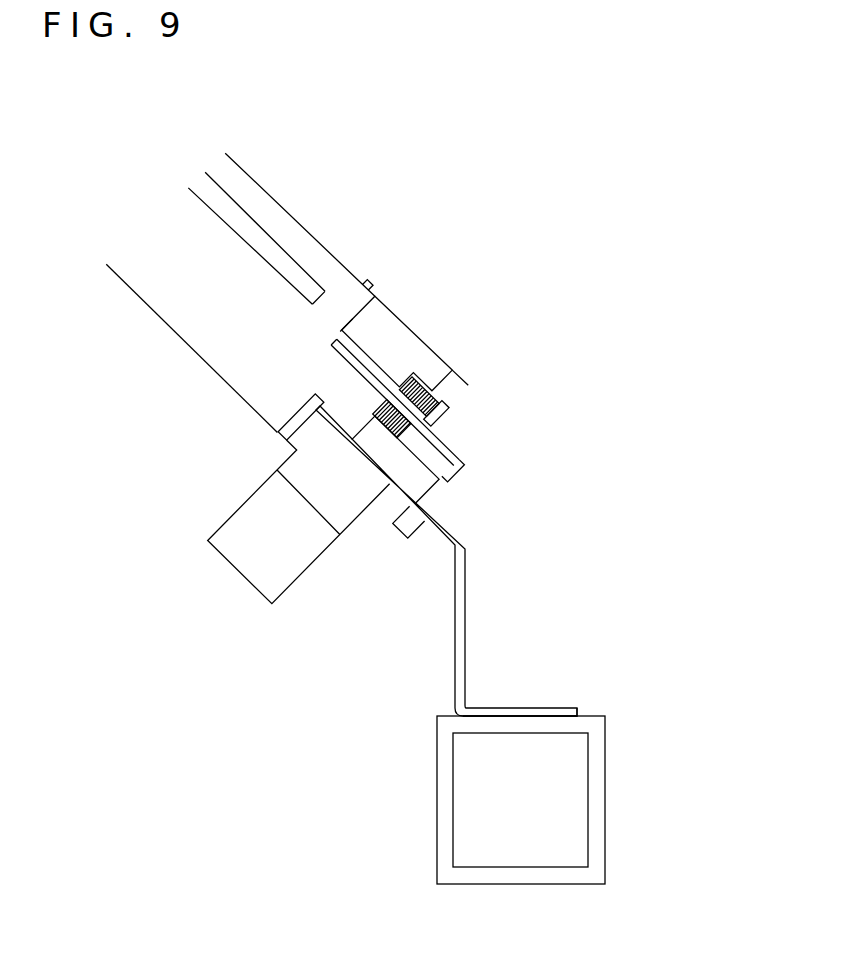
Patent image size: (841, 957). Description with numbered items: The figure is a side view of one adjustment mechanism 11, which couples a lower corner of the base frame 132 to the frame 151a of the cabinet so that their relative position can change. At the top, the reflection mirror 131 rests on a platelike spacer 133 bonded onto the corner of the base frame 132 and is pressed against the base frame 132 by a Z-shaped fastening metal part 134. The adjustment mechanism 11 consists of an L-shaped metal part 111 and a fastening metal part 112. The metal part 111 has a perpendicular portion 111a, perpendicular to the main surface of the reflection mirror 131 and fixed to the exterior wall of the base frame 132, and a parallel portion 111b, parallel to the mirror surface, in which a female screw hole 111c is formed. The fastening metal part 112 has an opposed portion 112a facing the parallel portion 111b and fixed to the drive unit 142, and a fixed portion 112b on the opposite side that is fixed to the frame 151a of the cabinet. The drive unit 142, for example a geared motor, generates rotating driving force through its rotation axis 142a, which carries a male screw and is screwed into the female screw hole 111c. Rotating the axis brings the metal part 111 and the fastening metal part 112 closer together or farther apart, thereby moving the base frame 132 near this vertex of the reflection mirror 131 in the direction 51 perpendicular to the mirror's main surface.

The reflection mirror 131 is at (234, 170).
The spacer 133 is at (330, 313).
The fastening metal part 134 is at (398, 309).
The base frame 132 is at (191, 331).
The adjustment mechanism 11 is at (308, 372).
The rotation axis 142a is at (430, 390).
The female screw hole 111c is at (405, 420).
The parallel portion 111b is at (447, 458).
The metal part 111 is at (427, 480).
The perpendicular portion 111a is at (400, 512).
The fastening metal part 112 is at (467, 595).
The opposed portion 112a is at (318, 403).
The fixed portion 112b is at (530, 713).
The drive unit 142 is at (242, 558).
The direction 51 is at (458, 531).
The frame 151a is at (598, 782).